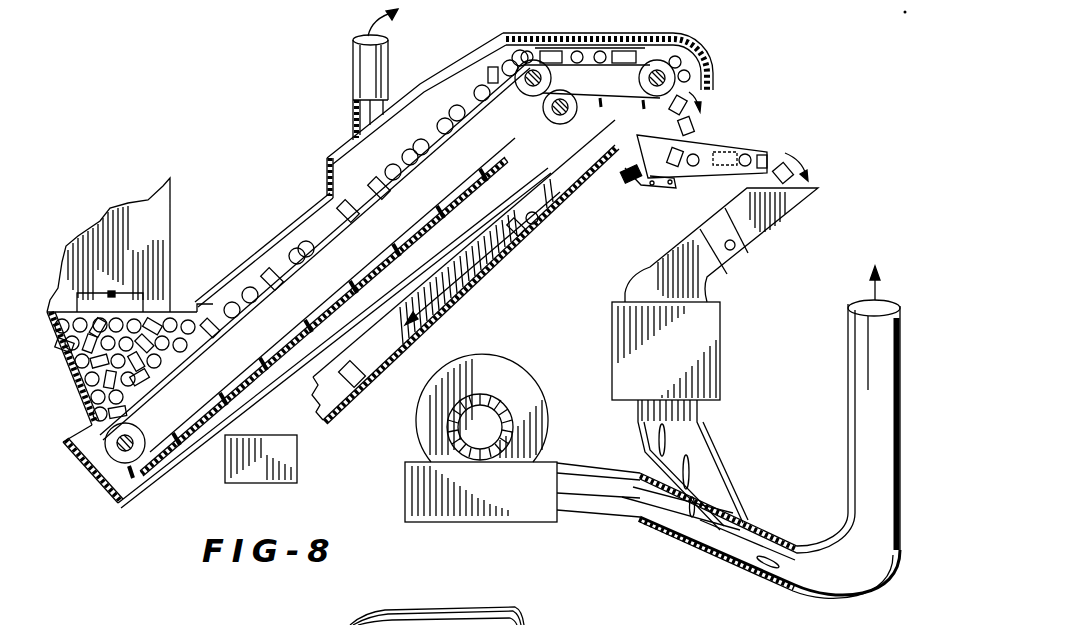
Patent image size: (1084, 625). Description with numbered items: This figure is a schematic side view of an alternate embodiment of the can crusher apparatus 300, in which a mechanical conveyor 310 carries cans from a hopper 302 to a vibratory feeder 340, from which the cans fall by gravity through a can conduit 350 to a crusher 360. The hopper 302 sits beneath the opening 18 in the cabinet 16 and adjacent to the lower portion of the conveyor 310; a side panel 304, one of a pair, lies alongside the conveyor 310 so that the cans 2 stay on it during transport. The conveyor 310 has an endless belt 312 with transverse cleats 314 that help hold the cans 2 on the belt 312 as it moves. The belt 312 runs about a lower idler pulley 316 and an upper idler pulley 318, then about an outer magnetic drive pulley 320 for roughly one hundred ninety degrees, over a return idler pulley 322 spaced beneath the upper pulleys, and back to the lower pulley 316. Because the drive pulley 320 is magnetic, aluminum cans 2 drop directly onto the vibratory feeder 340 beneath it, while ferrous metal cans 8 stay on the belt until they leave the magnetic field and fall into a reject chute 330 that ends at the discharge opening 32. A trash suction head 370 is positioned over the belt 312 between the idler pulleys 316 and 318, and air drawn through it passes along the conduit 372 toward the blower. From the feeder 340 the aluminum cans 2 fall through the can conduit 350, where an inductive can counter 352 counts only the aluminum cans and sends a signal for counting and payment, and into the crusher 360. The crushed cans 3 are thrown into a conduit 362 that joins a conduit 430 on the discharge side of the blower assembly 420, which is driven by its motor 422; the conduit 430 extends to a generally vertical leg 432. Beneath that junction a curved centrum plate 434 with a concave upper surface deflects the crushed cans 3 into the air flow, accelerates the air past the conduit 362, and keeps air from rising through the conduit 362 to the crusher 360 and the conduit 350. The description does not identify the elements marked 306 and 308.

The cans 2 is at (100, 318).
The crushed cans 3 is at (670, 440).
The ferrous metal cans 8 is at (538, 232).
The cabinet 16 is at (163, 222).
The opening 18 is at (113, 292).
The discharge opening 32 is at (298, 466).
The can crusher apparatus 300 is at (716, 44).
The hopper 302 is at (68, 395).
The side panel 304 is at (693, 14).
The conveyor side wall 306 is at (223, 280).
The wall step 308 is at (327, 183).
The conveyor 310 is at (160, 468).
The endless belt 312 is at (300, 263).
The cleats 314 is at (260, 352).
The lower idler pulley 316 is at (138, 431).
The upper idler pulley 318 is at (527, 93).
The drive pulley 320 is at (650, 60).
The return idler pulley 322 is at (576, 113).
The reject chute 330 is at (488, 278).
The vibratory feeder 340 is at (685, 168).
The can conduit 350 is at (786, 200).
The can counter 352 is at (736, 249).
The crusher 360 is at (728, 340).
The conduit 362 is at (712, 466).
The trash suction head 370 is at (350, 147).
The conduit 372 is at (353, 62).
The blower assembly 420 is at (497, 352).
The motor 422 is at (488, 418).
The conduit 430 is at (583, 465).
The vertical leg 432 is at (847, 462).
The curved centrum plate 434 is at (742, 521).